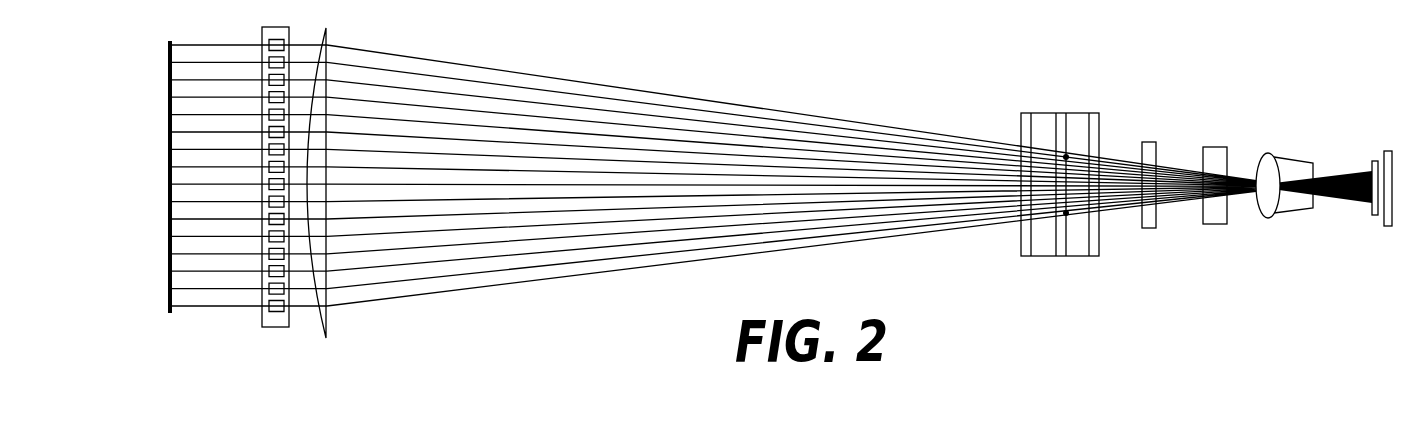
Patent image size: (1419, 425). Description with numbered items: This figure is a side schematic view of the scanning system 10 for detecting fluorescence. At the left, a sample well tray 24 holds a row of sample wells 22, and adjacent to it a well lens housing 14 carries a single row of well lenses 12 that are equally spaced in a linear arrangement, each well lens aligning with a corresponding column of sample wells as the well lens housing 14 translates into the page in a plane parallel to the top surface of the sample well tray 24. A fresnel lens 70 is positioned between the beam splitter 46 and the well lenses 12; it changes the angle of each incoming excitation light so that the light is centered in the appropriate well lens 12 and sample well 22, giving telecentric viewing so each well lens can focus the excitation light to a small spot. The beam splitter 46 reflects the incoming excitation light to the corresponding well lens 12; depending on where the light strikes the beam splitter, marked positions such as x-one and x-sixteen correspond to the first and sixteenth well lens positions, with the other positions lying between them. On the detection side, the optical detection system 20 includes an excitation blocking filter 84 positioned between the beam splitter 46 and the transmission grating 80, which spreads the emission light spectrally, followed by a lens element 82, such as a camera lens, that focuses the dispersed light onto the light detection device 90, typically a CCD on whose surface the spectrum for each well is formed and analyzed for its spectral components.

The scanning system 10 is at (502, 306).
The well lenses 12 is at (267, 308).
The well lens housing 14 is at (281, 327).
The optical detection system 20 is at (1203, 262).
The sample wells 22 is at (172, 79).
The sample well tray 24 is at (158, 166).
The beam splitter 46 is at (1072, 119).
The fresnel lens 70 is at (329, 41).
The transmission grating 80 is at (1210, 147).
The lens element 82 is at (1276, 157).
The excitation blocking filter 84 is at (1148, 142).
The light detection device 90 is at (1375, 161).